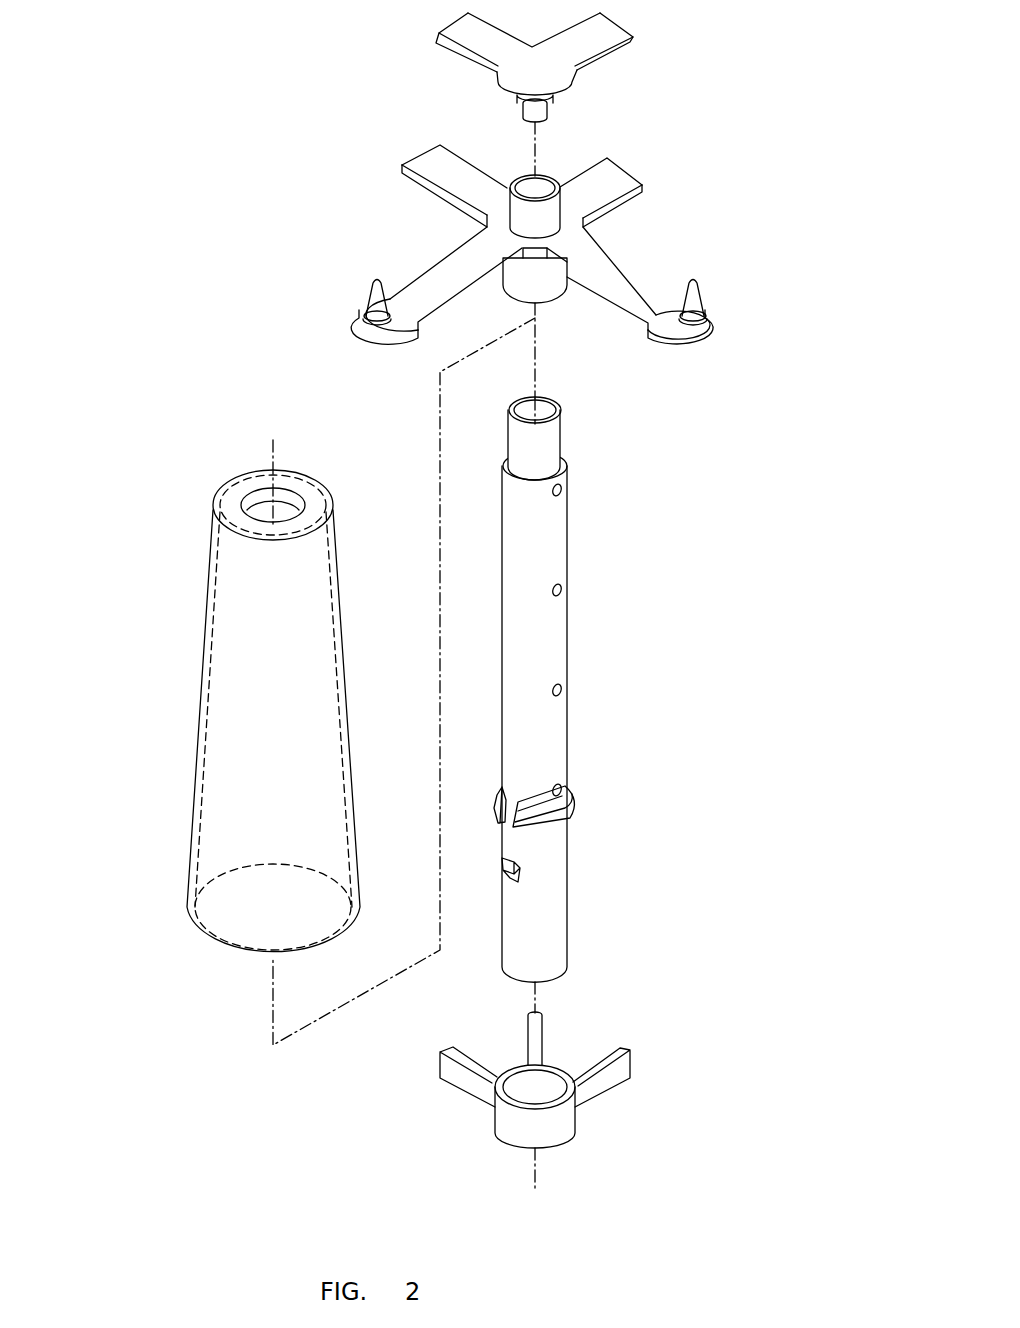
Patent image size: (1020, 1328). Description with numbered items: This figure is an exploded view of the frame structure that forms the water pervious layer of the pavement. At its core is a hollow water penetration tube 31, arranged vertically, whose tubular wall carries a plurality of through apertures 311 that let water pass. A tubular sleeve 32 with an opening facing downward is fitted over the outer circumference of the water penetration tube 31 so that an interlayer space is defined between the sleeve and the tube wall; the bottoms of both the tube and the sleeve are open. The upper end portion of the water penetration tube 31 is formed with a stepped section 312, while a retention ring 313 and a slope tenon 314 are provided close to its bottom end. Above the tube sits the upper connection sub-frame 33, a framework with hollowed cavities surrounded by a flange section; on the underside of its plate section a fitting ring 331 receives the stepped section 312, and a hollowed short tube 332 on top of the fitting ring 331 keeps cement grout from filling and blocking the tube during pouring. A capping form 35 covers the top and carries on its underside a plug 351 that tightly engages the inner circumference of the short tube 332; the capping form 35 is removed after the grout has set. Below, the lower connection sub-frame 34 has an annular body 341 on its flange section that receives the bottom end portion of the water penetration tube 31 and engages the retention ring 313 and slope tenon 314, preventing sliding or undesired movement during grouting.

The water penetration tube 31 is at (611, 689).
The through apertures 311 is at (560, 590).
The stepped section 312 is at (548, 438).
The retention ring 313 is at (553, 813).
The slope tenon 314 is at (510, 880).
The tubular sleeve 32 is at (245, 672).
The upper connection sub-frame 33 is at (640, 278).
The fitting ring 331 is at (547, 287).
The short tube 332 is at (517, 208).
The lower connection sub-frame 34 is at (550, 1089).
The annular body 341 is at (510, 1118).
The capping form 35 is at (582, 48).
The plug 351 is at (540, 115).